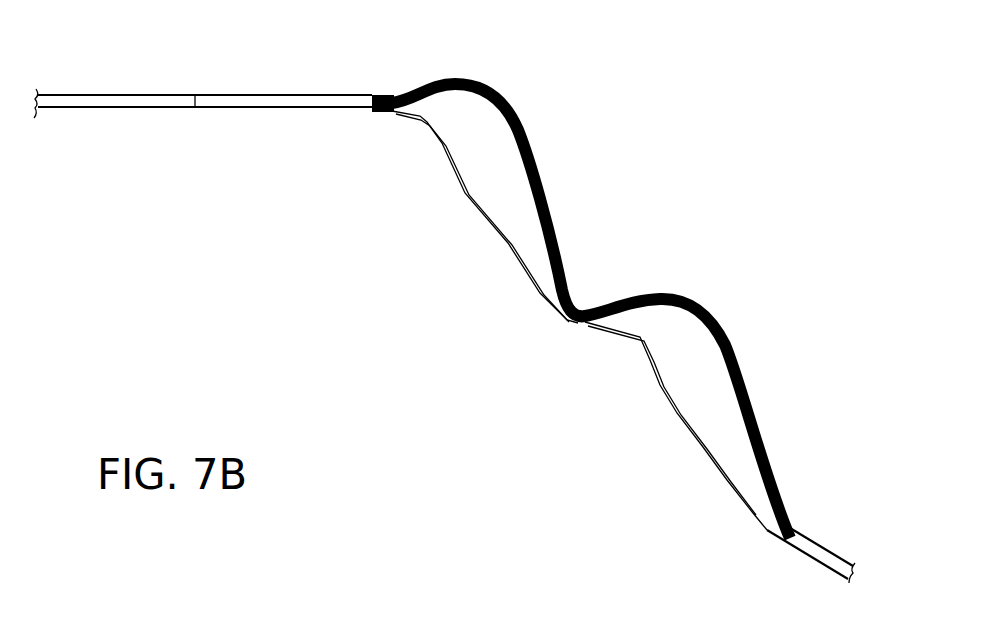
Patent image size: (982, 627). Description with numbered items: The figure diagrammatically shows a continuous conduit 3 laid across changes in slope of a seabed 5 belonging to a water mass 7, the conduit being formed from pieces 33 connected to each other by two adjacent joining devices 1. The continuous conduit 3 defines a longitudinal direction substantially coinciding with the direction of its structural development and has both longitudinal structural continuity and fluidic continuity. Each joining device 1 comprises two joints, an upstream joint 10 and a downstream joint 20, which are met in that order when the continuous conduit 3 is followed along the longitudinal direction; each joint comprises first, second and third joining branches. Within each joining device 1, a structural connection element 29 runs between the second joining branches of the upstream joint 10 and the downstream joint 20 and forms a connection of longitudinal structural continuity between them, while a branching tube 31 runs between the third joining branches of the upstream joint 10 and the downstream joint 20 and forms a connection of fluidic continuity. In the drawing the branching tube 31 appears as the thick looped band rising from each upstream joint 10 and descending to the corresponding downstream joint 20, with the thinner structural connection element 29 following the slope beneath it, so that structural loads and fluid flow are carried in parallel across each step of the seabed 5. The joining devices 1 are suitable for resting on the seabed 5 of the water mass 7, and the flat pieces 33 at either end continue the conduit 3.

The joining device 1 is at (548, 138).
The continuous conduit 3 is at (222, 95).
The seabed 5 is at (438, 158).
The water mass 7 is at (568, 51).
The upstream joint 10 is at (386, 95).
The downstream joint 20 is at (567, 292).
The structural connection element 29 is at (473, 200).
The branching tube 31 is at (547, 198).
The pieces 33 is at (88, 97).